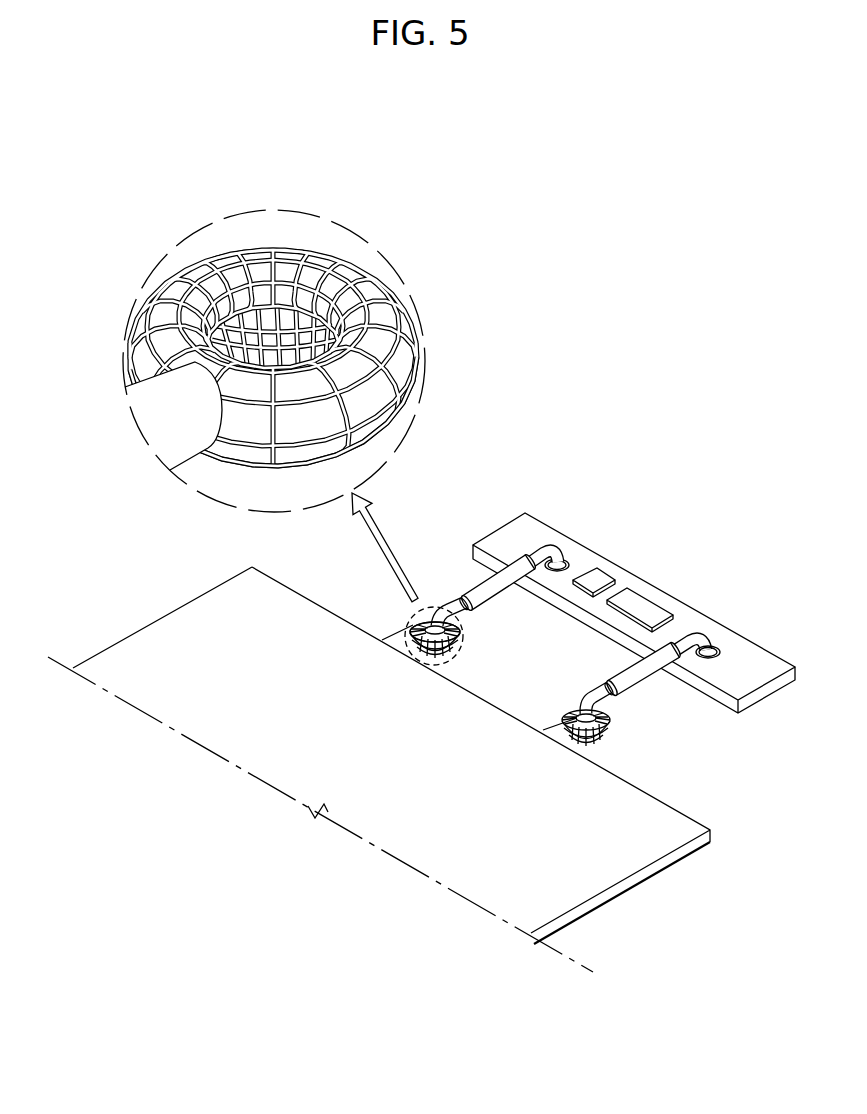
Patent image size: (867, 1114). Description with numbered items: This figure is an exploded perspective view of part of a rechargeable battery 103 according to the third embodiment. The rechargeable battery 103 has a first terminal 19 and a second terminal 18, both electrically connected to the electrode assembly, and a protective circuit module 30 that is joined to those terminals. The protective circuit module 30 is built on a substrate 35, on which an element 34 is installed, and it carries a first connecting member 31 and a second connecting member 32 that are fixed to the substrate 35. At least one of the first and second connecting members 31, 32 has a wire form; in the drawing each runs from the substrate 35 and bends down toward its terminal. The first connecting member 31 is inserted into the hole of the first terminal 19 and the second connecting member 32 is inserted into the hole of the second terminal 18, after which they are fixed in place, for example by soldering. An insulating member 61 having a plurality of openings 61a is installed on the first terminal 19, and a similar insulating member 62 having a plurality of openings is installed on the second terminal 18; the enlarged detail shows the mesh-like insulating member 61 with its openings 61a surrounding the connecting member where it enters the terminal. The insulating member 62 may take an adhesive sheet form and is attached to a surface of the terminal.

The rechargeable battery 103 is at (141, 618).
The protective circuit module 30 is at (676, 586).
The first connecting member 31 is at (475, 582).
The second connecting member 32 is at (652, 672).
The element 34 is at (598, 576).
The substrate 35 is at (583, 552).
The insulating member 61 is at (430, 612).
The openings 61a is at (404, 312).
The insulating member 62 is at (608, 720).
The first terminal 19 is at (408, 355).
The second terminal 18 is at (605, 737).